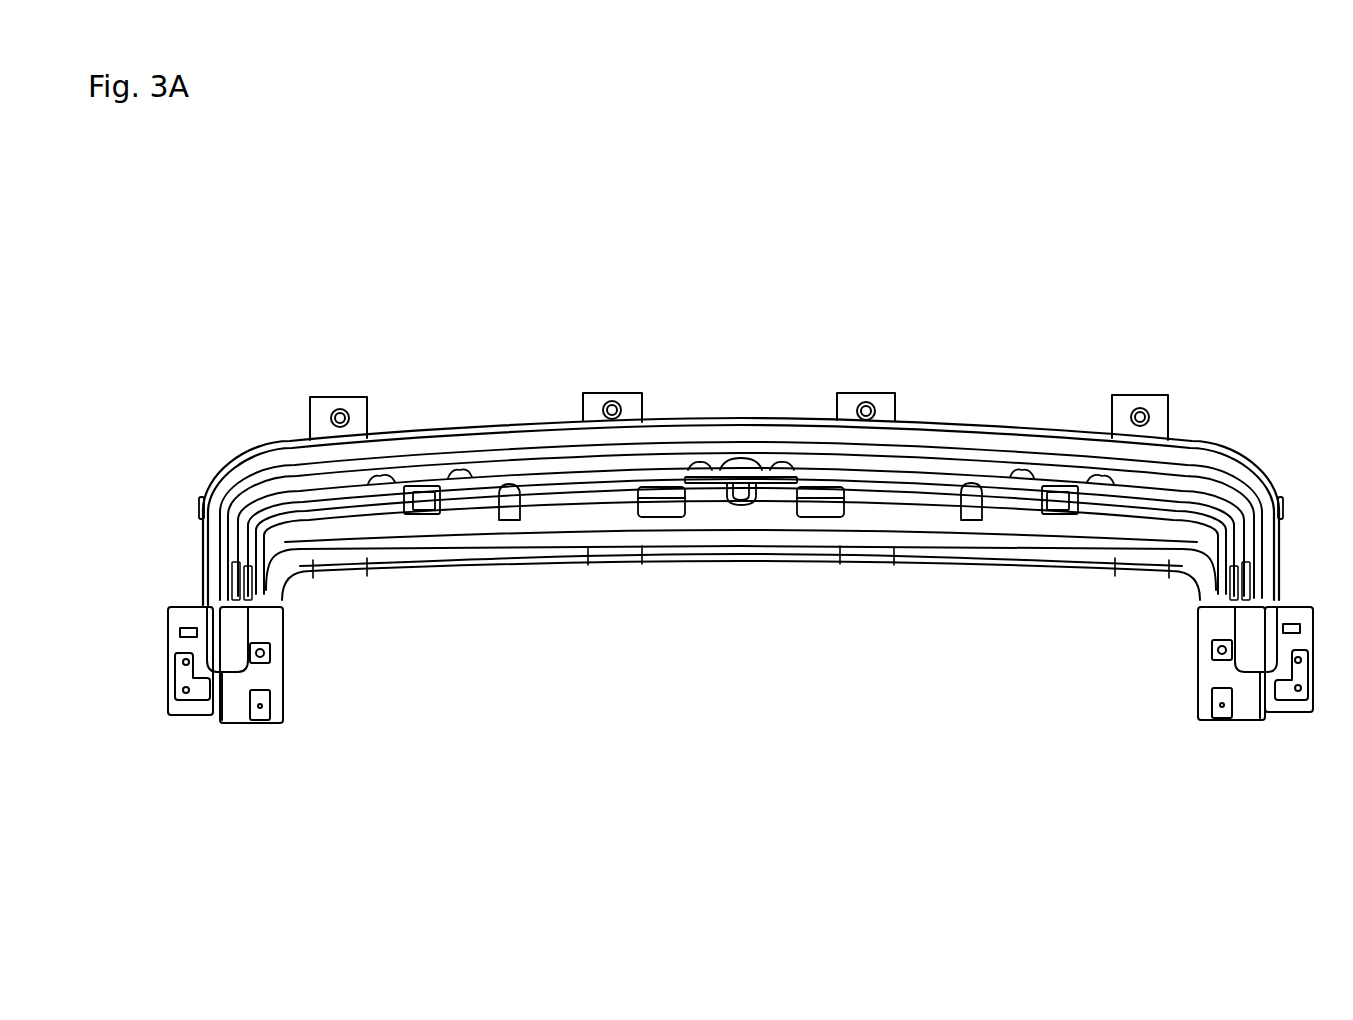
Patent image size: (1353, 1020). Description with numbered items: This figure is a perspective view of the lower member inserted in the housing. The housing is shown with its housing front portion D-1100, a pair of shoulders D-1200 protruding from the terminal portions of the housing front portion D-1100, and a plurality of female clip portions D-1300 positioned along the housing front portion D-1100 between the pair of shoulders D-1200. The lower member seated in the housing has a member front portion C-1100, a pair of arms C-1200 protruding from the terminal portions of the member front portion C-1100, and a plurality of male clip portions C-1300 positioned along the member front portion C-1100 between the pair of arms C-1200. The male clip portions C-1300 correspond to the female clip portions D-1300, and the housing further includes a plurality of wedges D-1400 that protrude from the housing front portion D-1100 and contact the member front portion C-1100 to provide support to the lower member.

The housing front portion D-1100 is at (771, 388).
The member front portion C-1100 is at (743, 436).
The arms C-1200 is at (220, 501).
The shoulders D-1200 is at (240, 651).
The female clip portions D-1300 is at (412, 482).
The male clip portions C-1300 is at (443, 469).
The wedges D-1400 is at (540, 526).